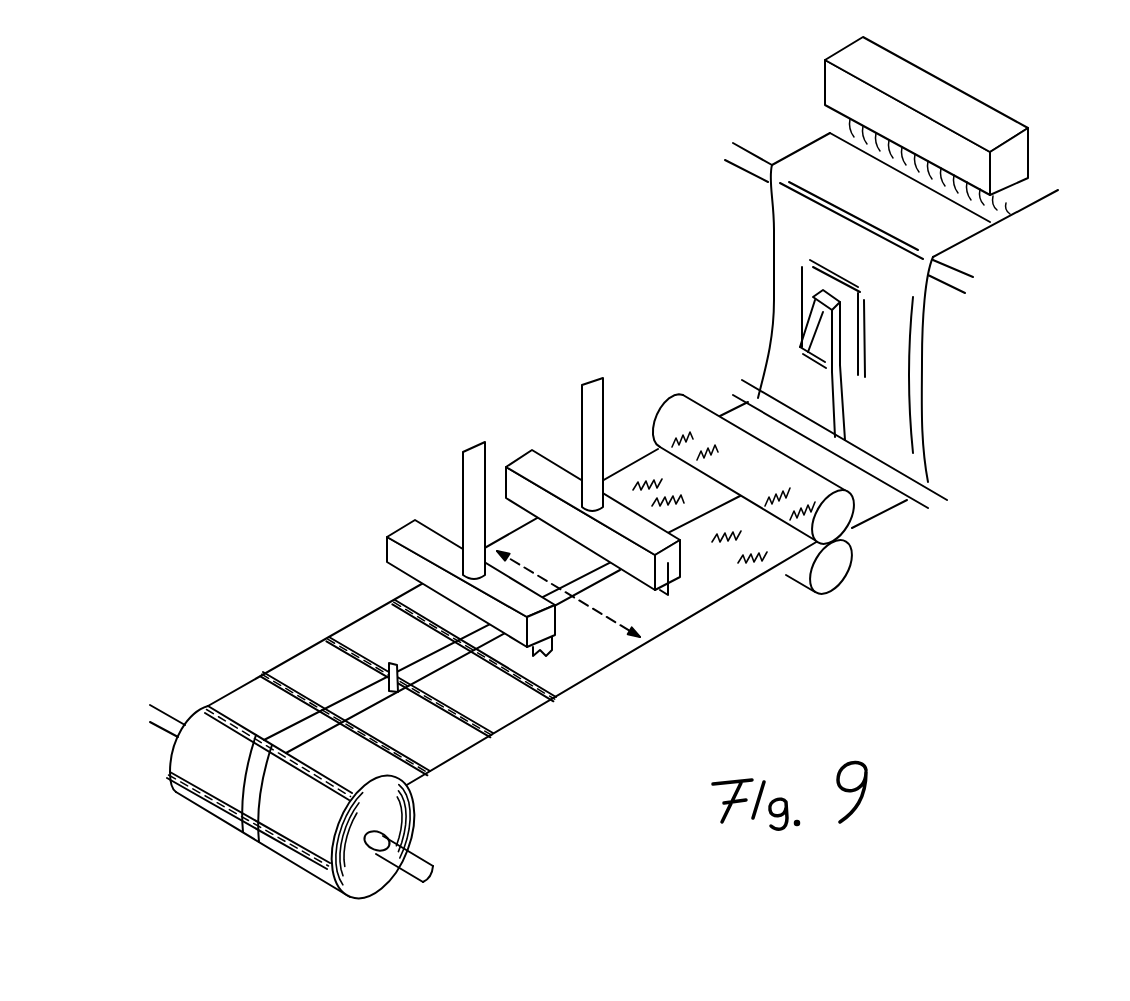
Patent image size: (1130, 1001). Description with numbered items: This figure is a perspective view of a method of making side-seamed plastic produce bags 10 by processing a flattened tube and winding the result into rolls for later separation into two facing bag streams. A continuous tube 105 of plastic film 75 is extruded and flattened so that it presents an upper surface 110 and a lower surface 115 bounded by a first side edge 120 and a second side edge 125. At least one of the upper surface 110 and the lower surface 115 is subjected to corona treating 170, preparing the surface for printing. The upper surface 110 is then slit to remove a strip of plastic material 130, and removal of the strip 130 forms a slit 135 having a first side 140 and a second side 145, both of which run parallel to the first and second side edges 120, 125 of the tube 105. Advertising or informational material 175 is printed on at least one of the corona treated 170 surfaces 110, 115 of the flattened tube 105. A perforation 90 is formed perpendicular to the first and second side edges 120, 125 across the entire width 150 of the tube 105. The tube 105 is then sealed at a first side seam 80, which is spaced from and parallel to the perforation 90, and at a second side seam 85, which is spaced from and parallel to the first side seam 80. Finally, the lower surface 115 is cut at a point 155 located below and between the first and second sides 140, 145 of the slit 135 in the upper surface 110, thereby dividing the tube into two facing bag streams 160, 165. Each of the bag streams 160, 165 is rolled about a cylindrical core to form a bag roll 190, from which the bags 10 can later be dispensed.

The side-seamed plastic produce bag 10 is at (455, 738).
The plastic film 75 is at (1038, 190).
The first side seam 80 is at (530, 697).
The second side seam 85 is at (533, 682).
The perforation 90 is at (683, 618).
The continuous tube 105 is at (970, 234).
The upper surface 110 is at (950, 250).
The lower surface 115 is at (797, 145).
The first side edge 120 is at (773, 232).
The second side edge 125 is at (922, 315).
The strip of plastic material 130 is at (822, 373).
The slit 135 is at (845, 393).
The first side 140 is at (823, 405).
The second side 145 is at (847, 422).
The entire width 150 is at (614, 612).
The point 155 is at (413, 670).
The first bag stream 160 is at (337, 752).
The second bag stream 165 is at (430, 783).
The corona treating 170 is at (1015, 208).
The advertising or informational material 175 is at (762, 545).
The bag roll 190 is at (430, 883).